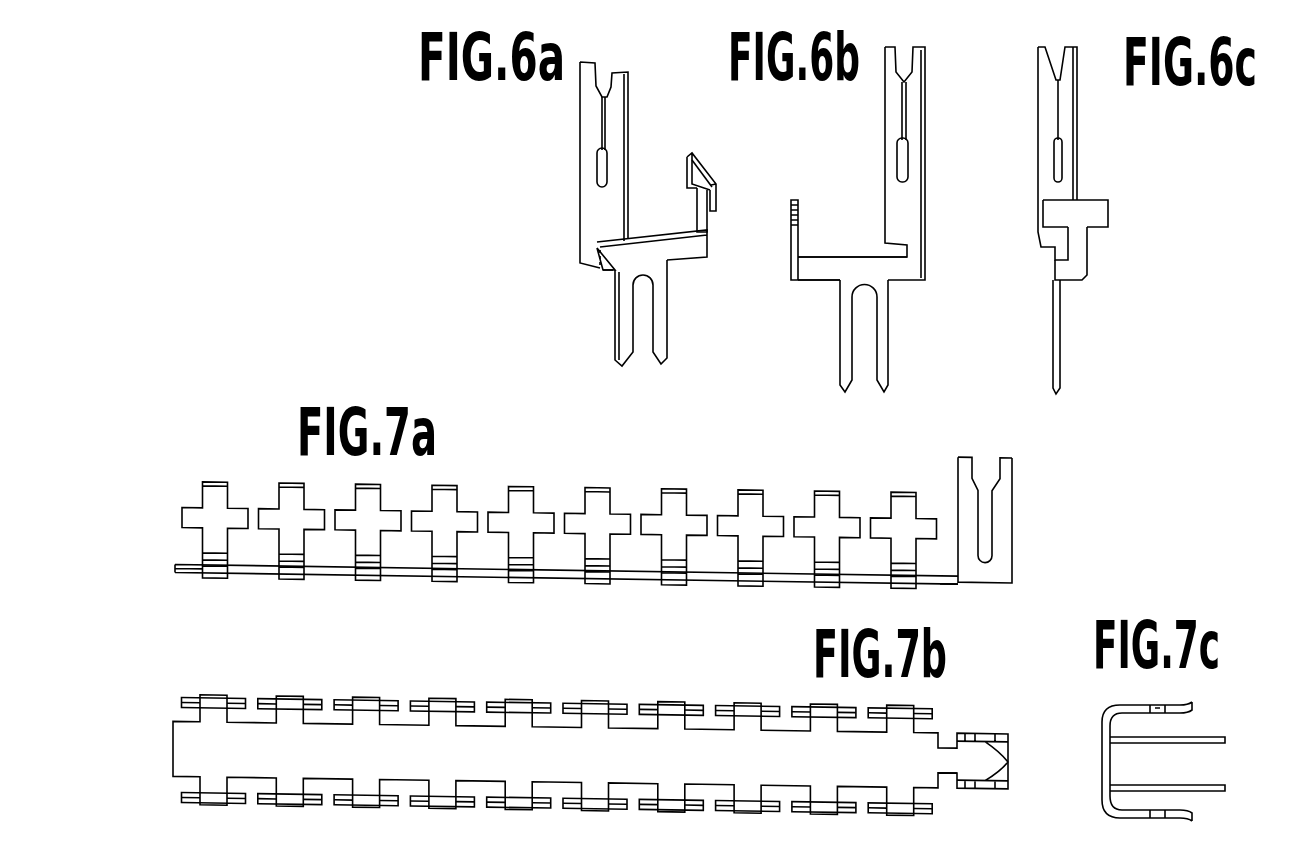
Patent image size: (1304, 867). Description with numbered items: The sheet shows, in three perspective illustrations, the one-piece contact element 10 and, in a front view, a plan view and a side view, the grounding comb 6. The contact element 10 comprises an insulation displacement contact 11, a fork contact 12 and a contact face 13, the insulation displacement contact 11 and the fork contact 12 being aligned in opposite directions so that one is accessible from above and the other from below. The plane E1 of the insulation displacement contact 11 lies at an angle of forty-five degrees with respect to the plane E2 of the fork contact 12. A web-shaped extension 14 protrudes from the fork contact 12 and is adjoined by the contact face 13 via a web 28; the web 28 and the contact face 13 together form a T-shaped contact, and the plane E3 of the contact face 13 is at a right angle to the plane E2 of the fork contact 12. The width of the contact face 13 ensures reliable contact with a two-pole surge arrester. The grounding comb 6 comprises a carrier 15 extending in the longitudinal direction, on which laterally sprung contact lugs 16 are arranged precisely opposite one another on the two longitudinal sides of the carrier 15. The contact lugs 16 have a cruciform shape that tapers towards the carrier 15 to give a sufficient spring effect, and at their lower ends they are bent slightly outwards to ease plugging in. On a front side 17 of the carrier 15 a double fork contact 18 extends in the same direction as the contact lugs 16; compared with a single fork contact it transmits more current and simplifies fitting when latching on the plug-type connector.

In FIG. 6a, the contact element 10 is at (650, 225).
In FIG. 6b, the contact element 10 is at (855, 236).
In FIG. 6c, the contact element 10 is at (1075, 227).
In FIG. 6a, the insulation displacement contact 11 is at (602, 135).
In FIG. 6b, the insulation displacement contact 11 is at (903, 112).
In FIG. 6c, the insulation displacement contact 11 is at (1058, 112).
In FIG. 6a, the fork contact 12 is at (650, 343).
In FIG. 6b, the fork contact 12 is at (855, 380).
In FIG. 6c, the fork contact 12 is at (1062, 385).
In FIG. 6a, the contact face 13 is at (715, 190).
In FIG. 6b, the contact face 13 is at (792, 202).
In FIG. 6c, the contact face 13 is at (1095, 213).
In FIG. 6a, the web-shaped extension 14 is at (680, 252).
In FIG. 6b, the web-shaped extension 14 is at (830, 272).
In FIG. 6a, the web 28 is at (697, 217).
In FIG. 6c, the web 28 is at (1078, 248).
In FIG. 6a, the plane of the insulation displacement contact E1 is at (602, 203).
In FIG. 6a, the plane of the fork contact E2 is at (638, 257).
In FIG. 6a, the plane of the contact face E3 is at (695, 177).
In FIG. 7a, the grounding comb 6 is at (531, 311).
In FIG. 7b, the grounding comb 6 is at (588, 733).
In FIG. 7c, the grounding comb 6 is at (1141, 765).
In FIG. 7a, the carrier 15 is at (400, 578).
In FIG. 7b, the carrier 15 is at (195, 748).
In FIG. 7c, the carrier 15 is at (1100, 768).
In FIG. 7a, the contact lugs 16 is at (213, 512).
In FIG. 7b, the contact lugs 16 is at (200, 698).
In FIG. 7c, the contact lugs 16 is at (1160, 705).
In FIG. 7a, the front side 17 is at (952, 571).
In FIG. 7b, the front side 17 is at (947, 770).
In FIG. 7a, the double fork contact 18 is at (972, 458).
In FIG. 7b, the double fork contact 18 is at (1008, 762).
In FIG. 7c, the double fork contact 18 is at (1193, 756).